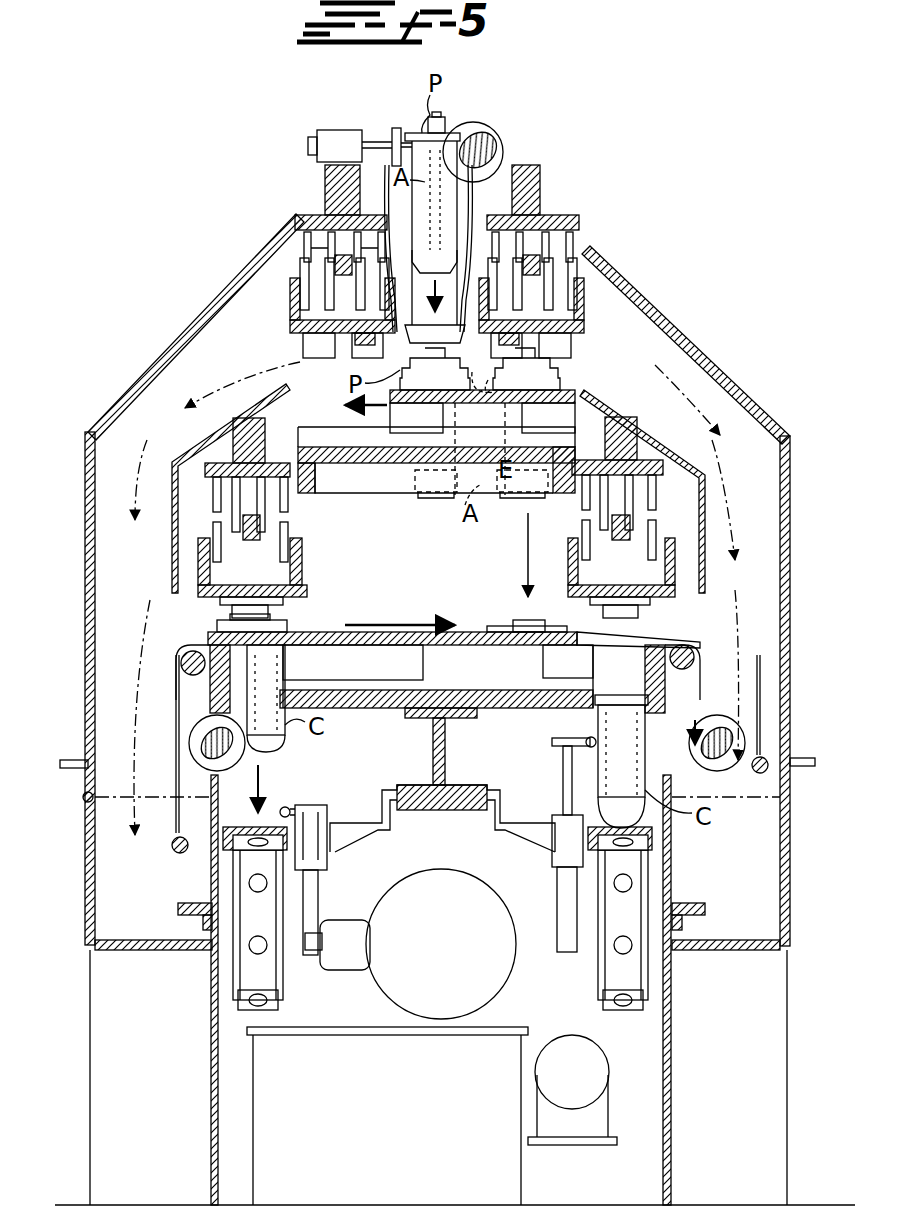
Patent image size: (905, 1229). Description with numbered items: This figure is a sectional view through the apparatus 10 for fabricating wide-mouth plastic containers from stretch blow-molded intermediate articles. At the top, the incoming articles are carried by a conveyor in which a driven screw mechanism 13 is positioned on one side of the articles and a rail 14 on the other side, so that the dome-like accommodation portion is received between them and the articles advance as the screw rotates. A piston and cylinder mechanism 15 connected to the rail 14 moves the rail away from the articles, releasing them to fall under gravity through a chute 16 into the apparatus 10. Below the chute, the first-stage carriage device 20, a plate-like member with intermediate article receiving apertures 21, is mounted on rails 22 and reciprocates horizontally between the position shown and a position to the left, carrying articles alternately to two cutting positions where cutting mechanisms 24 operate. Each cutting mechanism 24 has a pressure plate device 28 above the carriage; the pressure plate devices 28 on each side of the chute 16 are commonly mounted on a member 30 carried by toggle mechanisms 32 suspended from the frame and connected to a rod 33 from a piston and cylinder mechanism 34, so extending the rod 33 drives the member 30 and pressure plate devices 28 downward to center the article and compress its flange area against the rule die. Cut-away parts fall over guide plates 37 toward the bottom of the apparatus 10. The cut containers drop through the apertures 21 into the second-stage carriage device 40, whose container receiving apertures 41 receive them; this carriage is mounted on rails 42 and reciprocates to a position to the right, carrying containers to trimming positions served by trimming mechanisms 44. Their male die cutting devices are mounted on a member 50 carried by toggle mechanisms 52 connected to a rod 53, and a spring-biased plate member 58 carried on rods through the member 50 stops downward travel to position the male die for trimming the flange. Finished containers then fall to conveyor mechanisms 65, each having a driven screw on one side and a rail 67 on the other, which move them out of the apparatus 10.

The apparatus 10 is at (680, 212).
The driven screw mechanism 13 is at (472, 122).
The rail 14 is at (413, 130).
The piston and cylinder mechanism 15 is at (336, 140).
The chute 16 is at (432, 242).
The carriage device 20 is at (665, 400).
The intermediate article receiving apertures 21 is at (482, 449).
The rails 22 is at (345, 440).
The cutting mechanisms 24 is at (578, 365).
The pressure plate device 28 is at (318, 340).
The member 30 is at (292, 300).
The toggle mechanisms 32 is at (296, 222).
The rod 33 is at (438, 271).
The piston and cylinder mechanism 34 is at (305, 350).
The guide plates 37 is at (185, 440).
The carriage device 40 is at (465, 632).
The container receiving apertures 41 is at (200, 615).
The rails 42 is at (370, 690).
The trimming mechanisms 44 is at (290, 615).
The member 50 is at (205, 592).
The toggle mechanisms 52 is at (232, 528).
The rod 53 is at (434, 543).
The plate member 58 is at (222, 612).
The conveyor mechanisms 65 is at (250, 892).
The rail 67 is at (280, 805).